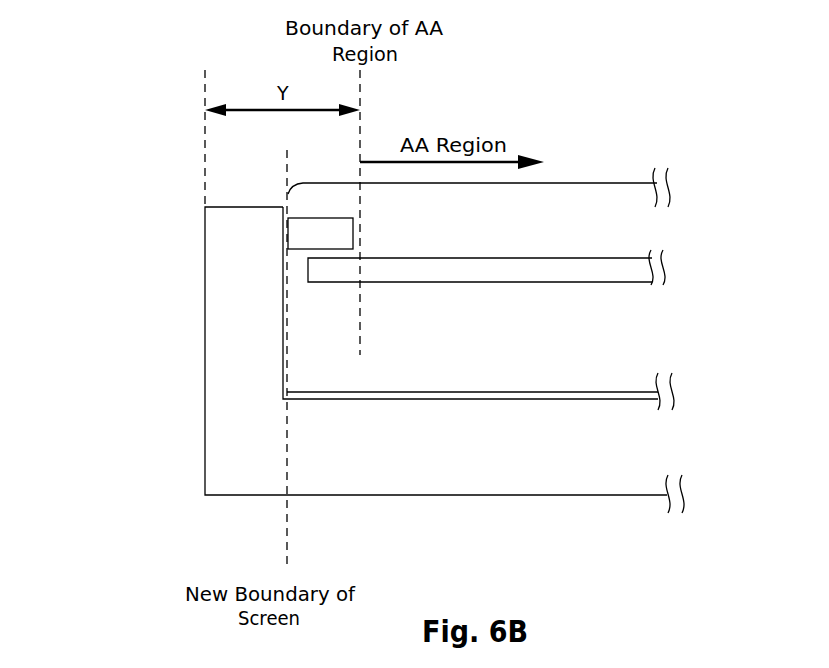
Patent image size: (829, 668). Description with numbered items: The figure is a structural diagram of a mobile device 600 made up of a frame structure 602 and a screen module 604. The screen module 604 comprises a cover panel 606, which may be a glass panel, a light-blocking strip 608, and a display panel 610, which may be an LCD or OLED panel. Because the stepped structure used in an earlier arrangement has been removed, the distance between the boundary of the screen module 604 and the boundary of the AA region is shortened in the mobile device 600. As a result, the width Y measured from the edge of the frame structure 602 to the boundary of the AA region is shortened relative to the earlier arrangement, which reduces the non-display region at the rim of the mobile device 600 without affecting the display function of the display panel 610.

The mobile device 600 is at (78, 248).
The frame structure 602 is at (232, 378).
The screen module 604 is at (584, 185).
The cover panel 606 is at (302, 202).
The light-blocking strip 608 is at (312, 238).
The display panel 610 is at (337, 270).